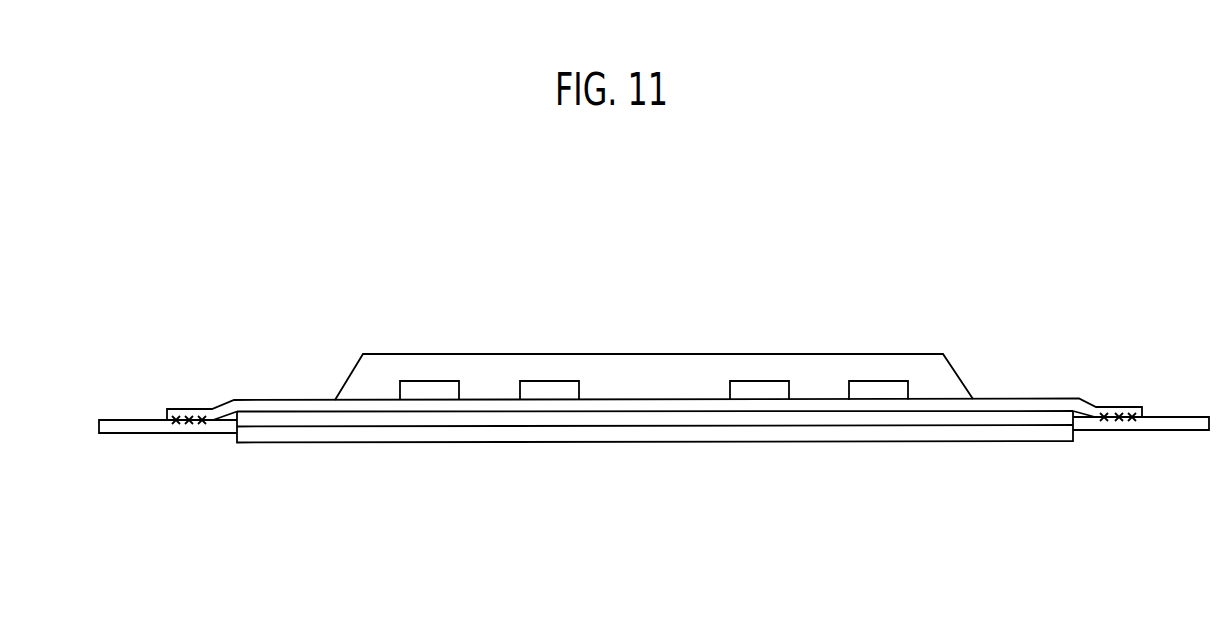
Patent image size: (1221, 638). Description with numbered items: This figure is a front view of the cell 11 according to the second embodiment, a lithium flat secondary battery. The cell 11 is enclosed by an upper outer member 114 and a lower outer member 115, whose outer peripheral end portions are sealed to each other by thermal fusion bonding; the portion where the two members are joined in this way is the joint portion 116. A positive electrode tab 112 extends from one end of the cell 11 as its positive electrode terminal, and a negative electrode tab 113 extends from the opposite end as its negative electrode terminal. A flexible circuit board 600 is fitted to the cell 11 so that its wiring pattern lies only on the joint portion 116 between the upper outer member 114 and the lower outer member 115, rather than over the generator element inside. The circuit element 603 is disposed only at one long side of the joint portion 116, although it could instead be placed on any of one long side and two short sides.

The cell 11 is at (1019, 263).
The positive electrode tab 112 is at (145, 425).
The negative electrode tab 113 is at (1165, 425).
The upper outer member 114 is at (707, 418).
The lower outer member 115 is at (1017, 435).
The joint portion 116 is at (300, 409).
The flexible circuit board 600 is at (1034, 396).
The circuit element 603 is at (533, 388).